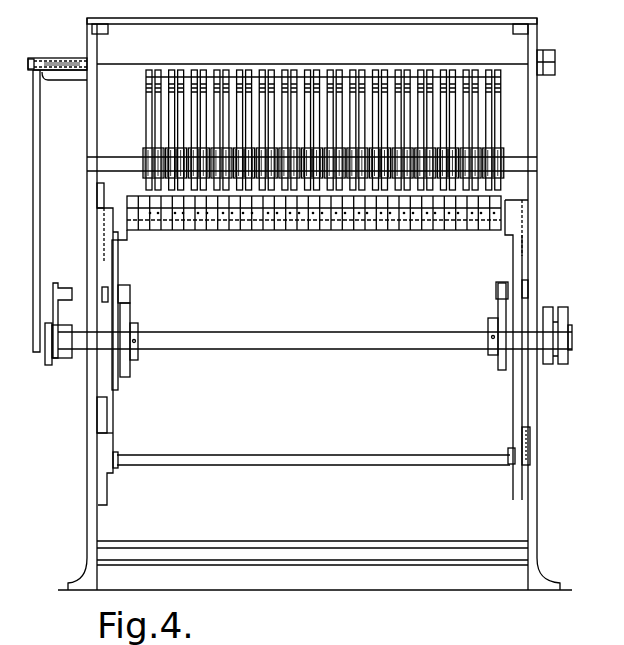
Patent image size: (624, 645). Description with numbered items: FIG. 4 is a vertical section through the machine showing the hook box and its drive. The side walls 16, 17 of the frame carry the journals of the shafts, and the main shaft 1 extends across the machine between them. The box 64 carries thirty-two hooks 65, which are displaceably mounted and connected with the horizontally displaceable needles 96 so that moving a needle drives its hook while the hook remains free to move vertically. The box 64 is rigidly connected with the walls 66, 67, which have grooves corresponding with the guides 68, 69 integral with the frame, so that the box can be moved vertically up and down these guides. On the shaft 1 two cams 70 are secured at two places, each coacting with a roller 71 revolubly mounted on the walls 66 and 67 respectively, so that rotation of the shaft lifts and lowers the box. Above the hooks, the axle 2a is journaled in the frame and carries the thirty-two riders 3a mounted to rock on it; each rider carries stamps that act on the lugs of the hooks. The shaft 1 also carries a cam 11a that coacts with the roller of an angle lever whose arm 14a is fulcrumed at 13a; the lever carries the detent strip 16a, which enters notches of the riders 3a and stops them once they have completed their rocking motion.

The shaft 1 is at (416, 338).
The axle 2a is at (121, 158).
The riders 3a is at (157, 117).
The cam 11a is at (56, 360).
The fulcrum 13a is at (53, 62).
The angle lever arm 14a is at (36, 176).
The side wall 16 is at (88, 242).
The detent strip 16a is at (133, 66).
The side wall 17 is at (535, 241).
The box 64 is at (124, 233).
The hooks 65 is at (185, 232).
The wall 66 is at (118, 276).
The wall 67 is at (513, 250).
The guide 68 is at (101, 205).
The guide 69 is at (528, 185).
The cams 70 is at (130, 312).
The roller 71 is at (130, 293).
The needles 96 is at (263, 214).